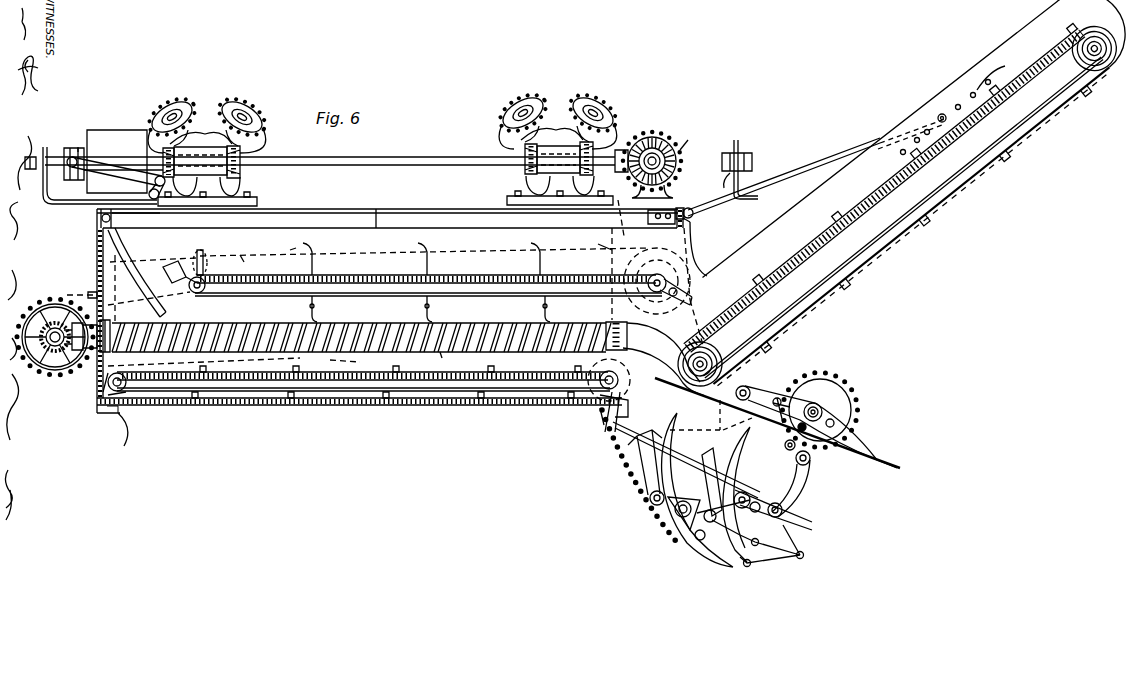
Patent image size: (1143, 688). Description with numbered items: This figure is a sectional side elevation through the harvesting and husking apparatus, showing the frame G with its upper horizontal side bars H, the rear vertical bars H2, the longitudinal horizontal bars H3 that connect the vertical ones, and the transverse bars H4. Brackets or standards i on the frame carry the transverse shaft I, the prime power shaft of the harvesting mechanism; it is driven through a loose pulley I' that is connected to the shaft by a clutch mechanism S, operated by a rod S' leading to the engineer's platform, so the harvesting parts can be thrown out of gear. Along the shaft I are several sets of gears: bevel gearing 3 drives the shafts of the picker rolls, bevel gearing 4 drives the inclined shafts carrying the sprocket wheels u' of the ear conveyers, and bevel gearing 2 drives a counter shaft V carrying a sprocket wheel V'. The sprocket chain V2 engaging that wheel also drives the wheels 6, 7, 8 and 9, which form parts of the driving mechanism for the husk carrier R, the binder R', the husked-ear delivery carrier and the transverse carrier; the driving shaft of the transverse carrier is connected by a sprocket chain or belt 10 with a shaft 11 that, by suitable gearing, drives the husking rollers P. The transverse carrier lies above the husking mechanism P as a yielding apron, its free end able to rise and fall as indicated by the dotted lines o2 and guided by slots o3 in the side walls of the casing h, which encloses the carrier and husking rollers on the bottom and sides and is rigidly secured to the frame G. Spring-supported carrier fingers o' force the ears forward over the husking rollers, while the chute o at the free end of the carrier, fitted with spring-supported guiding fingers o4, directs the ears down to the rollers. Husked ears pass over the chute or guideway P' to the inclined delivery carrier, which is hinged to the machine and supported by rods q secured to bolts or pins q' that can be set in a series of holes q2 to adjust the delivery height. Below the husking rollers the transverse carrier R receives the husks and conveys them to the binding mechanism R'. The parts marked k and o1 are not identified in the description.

The frame G is at (409, 335).
The upper horizontal bars H is at (95, 219).
The vertical bars H2 is at (694, 245).
The longitudinal horizontal bars H3 is at (605, 432).
The transverse bars H4 is at (376, 208).
The casing h is at (296, 248).
The chute o is at (440, 272).
The carrier fingers o' is at (369, 280).
The conveyor link o1 is at (180, 265).
The dotted lines o2 is at (242, 249).
The slots o3 is at (198, 254).
The guiding and directing fingers o4 is at (126, 262).
The husking mechanism P is at (341, 326).
The chute or guideway P' is at (439, 362).
The transverse carrier R is at (360, 378).
The binding mechanism R' is at (816, 445).
The sprocket chain or belt 10 is at (66, 298).
The shaft 11 is at (43, 313).
The transverse shaft I is at (320, 164).
The pulley I' is at (117, 154).
The clutch mechanism S is at (75, 137).
The rod S' is at (125, 178).
The bracket bolt k is at (391, 167).
The sprocket wheels u' is at (382, 110).
The brackets or standards i is at (203, 140).
The bevel gearing 4 is at (162, 161).
The bevel gearing 3 is at (572, 178).
The counter shaft V is at (652, 155).
The sprocket wheel V' is at (694, 136).
The bevel gearing 2 is at (631, 148).
The sprocket chain V2 is at (596, 240).
The wheel 9 is at (652, 266).
The wheel 8 is at (738, 350).
The rods q is at (879, 106).
The bolts or pins q' is at (920, 121).
The holes q2 is at (994, 72).
The wheel 6 is at (628, 386).
The wheel 7 is at (681, 488).